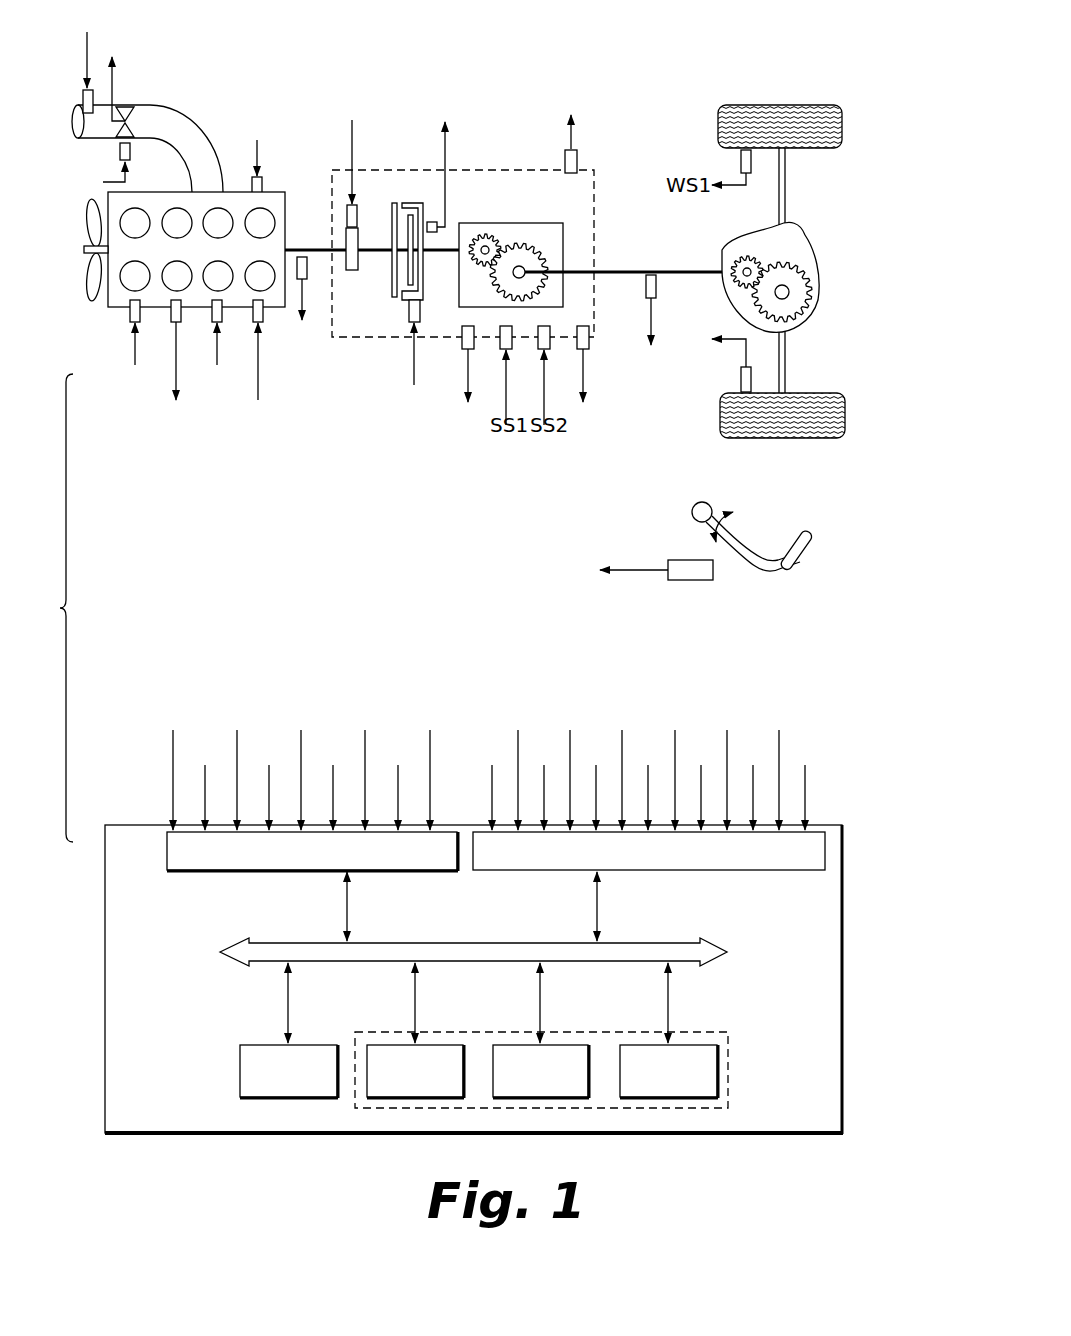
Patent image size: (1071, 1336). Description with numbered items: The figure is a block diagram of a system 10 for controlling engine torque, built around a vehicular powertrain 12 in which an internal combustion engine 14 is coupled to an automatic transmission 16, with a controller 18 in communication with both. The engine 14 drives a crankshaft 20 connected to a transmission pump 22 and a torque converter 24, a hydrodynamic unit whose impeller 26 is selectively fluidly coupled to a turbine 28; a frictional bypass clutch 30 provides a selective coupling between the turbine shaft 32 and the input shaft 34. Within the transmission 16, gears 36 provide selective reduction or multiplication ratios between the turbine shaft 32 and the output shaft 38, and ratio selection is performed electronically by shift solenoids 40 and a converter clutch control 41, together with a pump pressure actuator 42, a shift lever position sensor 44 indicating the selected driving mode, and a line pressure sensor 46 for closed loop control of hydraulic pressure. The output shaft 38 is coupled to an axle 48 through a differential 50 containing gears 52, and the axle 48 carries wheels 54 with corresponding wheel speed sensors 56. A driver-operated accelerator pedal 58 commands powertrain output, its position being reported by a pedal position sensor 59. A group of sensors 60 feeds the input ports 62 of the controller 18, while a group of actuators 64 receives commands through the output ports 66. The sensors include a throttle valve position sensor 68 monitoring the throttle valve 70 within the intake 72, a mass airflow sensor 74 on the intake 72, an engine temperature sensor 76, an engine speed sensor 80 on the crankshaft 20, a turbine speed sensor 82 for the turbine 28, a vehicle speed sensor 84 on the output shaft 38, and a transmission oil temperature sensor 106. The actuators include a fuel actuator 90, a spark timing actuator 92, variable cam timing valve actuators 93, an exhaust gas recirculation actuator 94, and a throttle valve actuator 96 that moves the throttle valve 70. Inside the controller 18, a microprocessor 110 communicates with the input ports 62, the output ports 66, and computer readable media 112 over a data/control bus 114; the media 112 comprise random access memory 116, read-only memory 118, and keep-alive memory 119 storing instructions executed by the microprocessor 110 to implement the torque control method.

The system 10 is at (58, 608).
The vehicular powertrain 12 is at (403, 424).
The internal combustion engine 14 is at (268, 310).
The automatic transmission 16 is at (594, 187).
The controller 18 is at (760, 1135).
The crankshaft 20 is at (306, 247).
The transmission pump 22 is at (352, 272).
The torque converter 24 is at (390, 308).
The impeller 26 is at (394, 212).
The turbine 28 is at (416, 290).
The bypass clutch 30 is at (407, 203).
The turbine shaft 32 is at (438, 253).
The input shaft 34 is at (368, 255).
The gears 36 is at (502, 225).
The output shaft 38 is at (620, 270).
The shift solenoids 40 is at (528, 434).
The converter clutch control 41 is at (410, 312).
The pump pressure actuator 42 is at (358, 210).
The shift lever position sensor 44 is at (579, 160).
The line pressure sensor 46 is at (584, 382).
The axle 48 is at (786, 186).
The differential 50 is at (814, 268).
The differential gears 52 is at (810, 312).
The wheels 54 is at (790, 440).
The wheel speed sensors 56 is at (732, 387).
The accelerator pedal 58 is at (800, 545).
The pedal position sensor 59 is at (690, 581).
The sensors 60 is at (802, 688).
The input ports 62 is at (736, 872).
The actuators 64 is at (154, 686).
The output ports 66 is at (224, 872).
The throttle valve position sensor 68 is at (115, 80).
The throttle valve 70 is at (132, 138).
The intake 72 is at (200, 128).
The mass airflow sensor 74 is at (83, 50).
The temperature sensor 76 is at (178, 365).
The engine speed sensor 80 is at (307, 272).
The turbine speed sensor 82 is at (431, 221).
The vehicle speed sensor 84 is at (645, 286).
The fuel actuator 90 is at (131, 355).
The spark actuator 92 is at (221, 365).
The intake/exhaust valve actuators 93 is at (258, 392).
The exhaust gas recirculation actuator 94 is at (264, 185).
The throttle valve actuator 96 is at (119, 152).
The transmission oil temperature sensor 106 is at (469, 389).
The microprocessor 110 is at (265, 1045).
The computer readable media 112 is at (728, 1067).
The data/control bus 114 is at (478, 941).
The random access memory 116 is at (695, 1045).
The read-only memory 118 is at (567, 1045).
The keep-alive memory 119 is at (393, 1045).